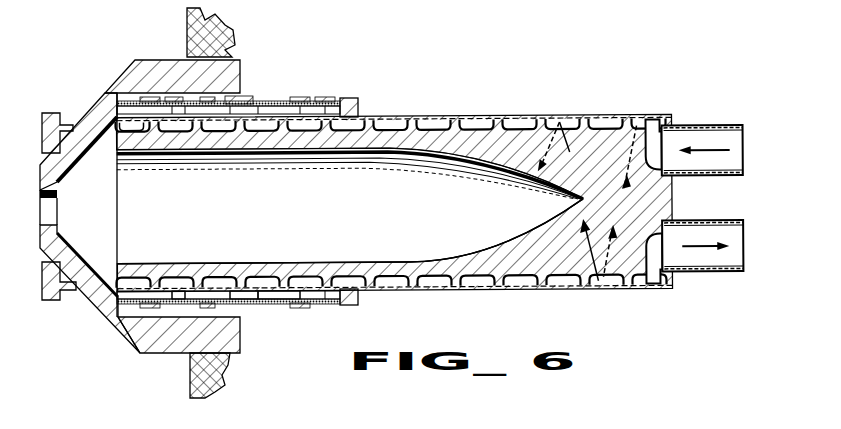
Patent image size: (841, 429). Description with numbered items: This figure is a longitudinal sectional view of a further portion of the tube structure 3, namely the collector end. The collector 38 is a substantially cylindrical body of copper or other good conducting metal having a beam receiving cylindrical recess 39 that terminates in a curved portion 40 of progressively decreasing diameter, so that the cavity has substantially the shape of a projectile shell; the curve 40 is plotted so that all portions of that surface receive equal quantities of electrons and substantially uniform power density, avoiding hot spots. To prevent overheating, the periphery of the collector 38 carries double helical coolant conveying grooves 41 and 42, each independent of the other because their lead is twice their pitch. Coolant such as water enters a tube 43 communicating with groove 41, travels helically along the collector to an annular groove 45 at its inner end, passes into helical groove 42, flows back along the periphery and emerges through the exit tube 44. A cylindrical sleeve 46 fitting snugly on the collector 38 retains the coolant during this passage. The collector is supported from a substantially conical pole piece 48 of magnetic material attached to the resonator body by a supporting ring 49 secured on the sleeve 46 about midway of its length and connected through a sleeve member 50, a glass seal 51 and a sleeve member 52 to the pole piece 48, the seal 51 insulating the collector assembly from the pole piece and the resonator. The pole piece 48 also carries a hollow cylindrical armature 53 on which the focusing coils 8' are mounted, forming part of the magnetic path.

The structure of FIG. 3 is at (394, 149).
The focusing coils 8' is at (227, 203).
The collector 38 is at (449, 266).
The beam receiving cylindrical recess 39 is at (283, 300).
The curved portion 40 is at (468, 216).
The helical coolant conveying groove 41 is at (550, 118).
The helical coolant conveying groove 42 is at (175, 128).
The tube 43 is at (703, 127).
The exit tube 44 is at (722, 270).
The annular groove 45 is at (138, 131).
The cylindrical sleeve 46 is at (432, 117).
The conical pole piece 48 is at (90, 113).
The supporting ring 49 is at (362, 100).
The sleeve member 50 is at (287, 100).
The glass seal 51 is at (232, 300).
The sleeve member 52 is at (180, 300).
The hollow cylindrical armature 53 is at (150, 62).